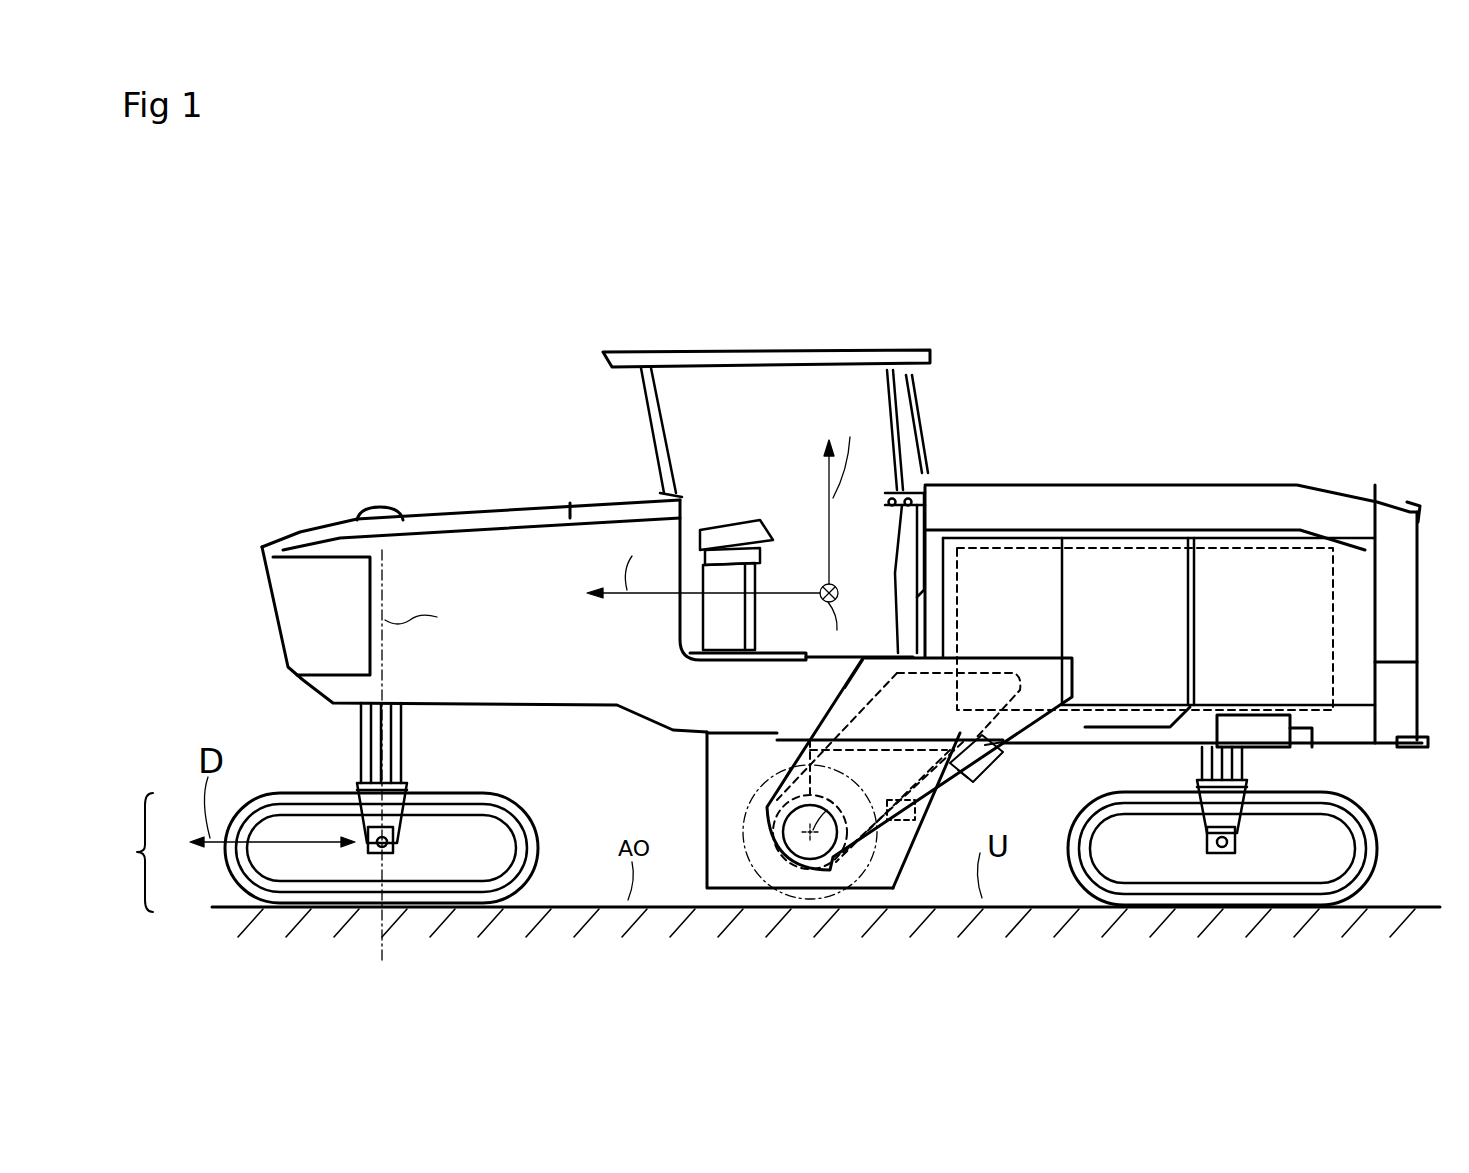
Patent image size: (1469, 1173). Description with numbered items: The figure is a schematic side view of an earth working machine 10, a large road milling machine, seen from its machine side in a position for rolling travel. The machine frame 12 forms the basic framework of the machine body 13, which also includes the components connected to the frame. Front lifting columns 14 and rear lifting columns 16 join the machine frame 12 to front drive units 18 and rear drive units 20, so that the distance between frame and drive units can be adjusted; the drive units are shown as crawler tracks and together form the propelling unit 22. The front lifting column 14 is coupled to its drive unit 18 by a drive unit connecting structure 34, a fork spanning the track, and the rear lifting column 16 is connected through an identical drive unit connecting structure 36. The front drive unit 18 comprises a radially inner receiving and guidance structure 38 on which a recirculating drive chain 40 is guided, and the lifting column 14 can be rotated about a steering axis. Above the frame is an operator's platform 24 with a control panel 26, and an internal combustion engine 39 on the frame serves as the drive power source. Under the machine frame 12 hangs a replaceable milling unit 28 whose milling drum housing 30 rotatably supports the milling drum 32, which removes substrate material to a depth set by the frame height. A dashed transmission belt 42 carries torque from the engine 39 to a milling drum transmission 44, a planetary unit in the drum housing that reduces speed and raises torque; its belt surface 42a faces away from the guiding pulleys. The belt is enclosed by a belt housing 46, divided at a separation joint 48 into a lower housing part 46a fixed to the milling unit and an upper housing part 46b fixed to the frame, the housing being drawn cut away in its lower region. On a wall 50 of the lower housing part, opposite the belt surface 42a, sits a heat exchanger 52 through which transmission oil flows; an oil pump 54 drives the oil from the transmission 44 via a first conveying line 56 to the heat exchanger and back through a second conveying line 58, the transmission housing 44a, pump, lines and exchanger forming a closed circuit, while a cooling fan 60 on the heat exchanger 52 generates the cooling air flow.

The earth working machine 10 is at (1222, 305).
The machine frame 12 is at (1278, 510).
The machine body 13 is at (1176, 616).
The front lifting columns 14 is at (397, 755).
The rear lifting columns 16 is at (1242, 767).
The front drive units 18 is at (260, 803).
The rear drive units 20 is at (1367, 810).
The propelling unit 22 is at (126, 852).
The operator's platform 24 is at (800, 378).
The control panel 26 is at (737, 525).
The milling unit 28 is at (690, 793).
The milling drum housing 30 is at (930, 807).
The milling drum 32 is at (833, 766).
The drive unit connecting structure 34 is at (368, 797).
The drive unit connecting structure 36 is at (1215, 797).
The receiving and guidance structure 38 is at (492, 868).
The internal combustion engine 39 is at (1115, 585).
The drive chain 40 is at (517, 806).
The transmission belt 42 is at (977, 675).
The belt surface 42a is at (1005, 672).
The milling drum transmission 44 is at (760, 857).
The milling drum transmission housing 44a is at (773, 813).
The belt housing 46 is at (792, 717).
The lower housing part 46a is at (787, 762).
The upper housing part 46b is at (840, 693).
The separation joint 48 is at (922, 737).
The wall 50 is at (963, 780).
The heat exchanger 52 is at (990, 743).
The oil pump 54 is at (910, 813).
The first conveying line 56 is at (887, 832).
The second conveying line 58 is at (880, 740).
The cooling fan 60 is at (995, 760).